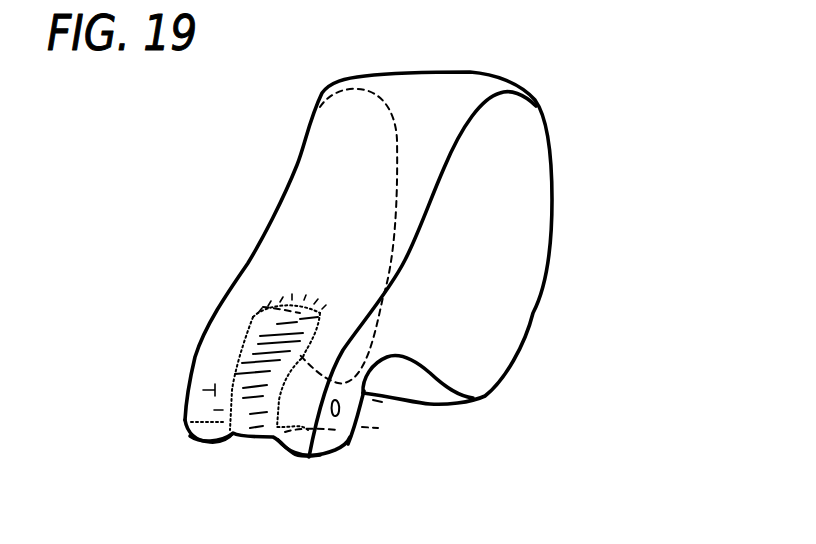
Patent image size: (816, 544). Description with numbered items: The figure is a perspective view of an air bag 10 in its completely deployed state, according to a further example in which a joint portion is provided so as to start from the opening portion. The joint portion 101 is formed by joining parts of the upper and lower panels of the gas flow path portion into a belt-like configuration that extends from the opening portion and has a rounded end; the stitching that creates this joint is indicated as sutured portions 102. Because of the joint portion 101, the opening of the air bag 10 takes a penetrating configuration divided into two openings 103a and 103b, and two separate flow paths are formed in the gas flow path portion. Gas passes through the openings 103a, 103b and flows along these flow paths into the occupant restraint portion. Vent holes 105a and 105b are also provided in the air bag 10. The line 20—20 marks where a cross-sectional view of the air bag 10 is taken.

The air bag 10 is at (579, 163).
The line 20— 20 is at (180, 362).
The joint portion 101 is at (243, 390).
The sutured portions 102 is at (270, 308).
The opening 103a is at (192, 445).
The opening 103b is at (284, 455).
The vent hole 105a is at (190, 410).
The vent hole 105b is at (334, 417).